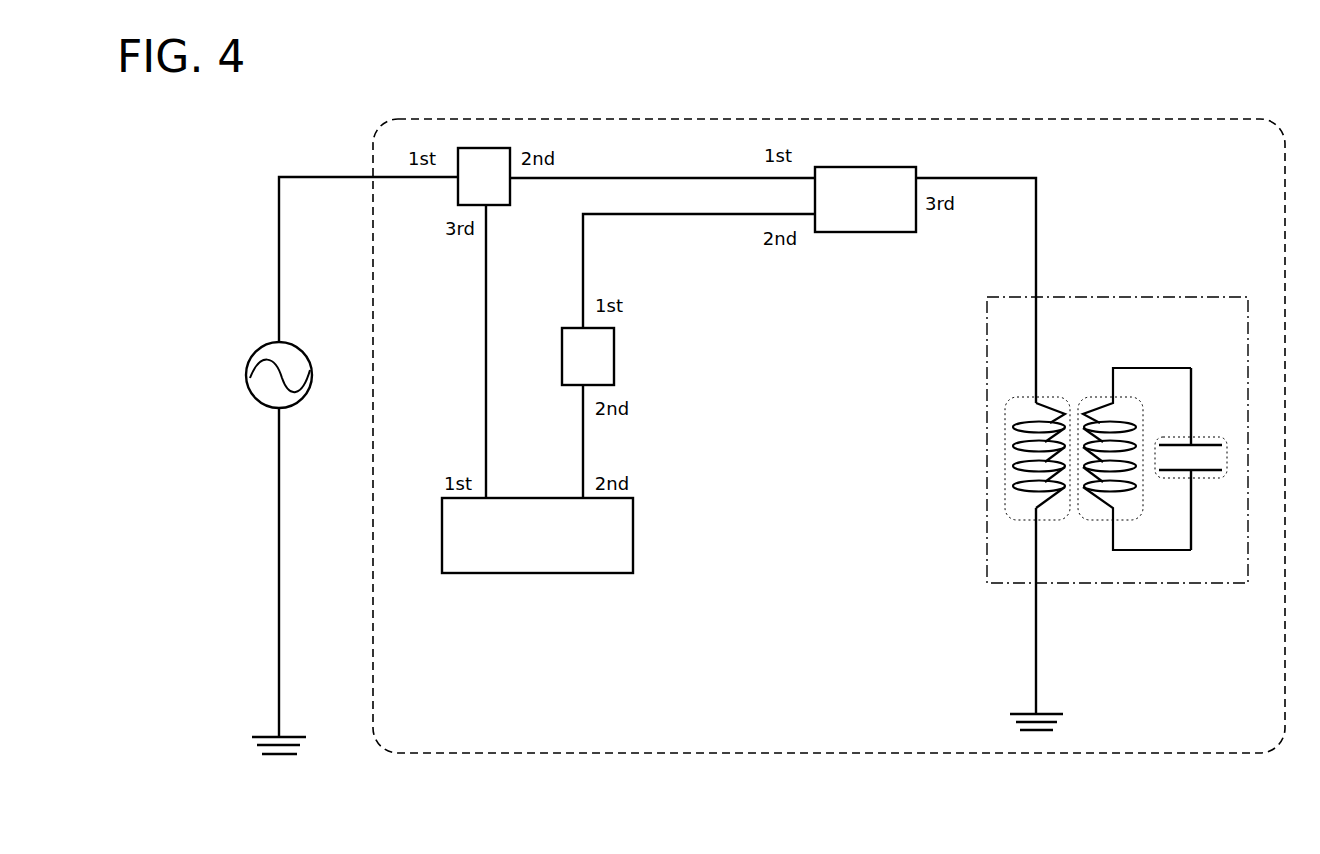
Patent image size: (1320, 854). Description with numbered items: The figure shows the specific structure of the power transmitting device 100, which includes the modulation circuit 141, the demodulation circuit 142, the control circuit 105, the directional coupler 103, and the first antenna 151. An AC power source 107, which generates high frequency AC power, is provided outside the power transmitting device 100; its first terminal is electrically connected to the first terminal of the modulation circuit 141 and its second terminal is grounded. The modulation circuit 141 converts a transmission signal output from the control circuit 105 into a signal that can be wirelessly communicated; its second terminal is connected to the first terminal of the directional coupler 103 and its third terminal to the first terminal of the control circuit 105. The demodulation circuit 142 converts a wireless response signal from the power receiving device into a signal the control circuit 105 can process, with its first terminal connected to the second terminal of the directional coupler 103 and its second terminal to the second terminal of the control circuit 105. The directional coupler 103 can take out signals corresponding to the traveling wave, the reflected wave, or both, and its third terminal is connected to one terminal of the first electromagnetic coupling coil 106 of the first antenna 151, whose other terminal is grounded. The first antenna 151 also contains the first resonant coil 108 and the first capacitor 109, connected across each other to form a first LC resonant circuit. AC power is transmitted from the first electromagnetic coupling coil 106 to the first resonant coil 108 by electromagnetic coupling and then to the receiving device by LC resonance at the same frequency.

The power transmitting device 100 is at (468, 726).
The directional coupler 103 is at (865, 199).
The control circuit 105 is at (537, 535).
The first electromagnetic coupling coil 106 is at (1063, 395).
The AC power source 107 is at (268, 410).
The first resonant coil 108 is at (1090, 522).
The first capacitor 109 is at (1205, 435).
The modulation circuit 141 is at (484, 176).
The demodulation circuit 142 is at (588, 356).
The first antenna 151 is at (1153, 583).